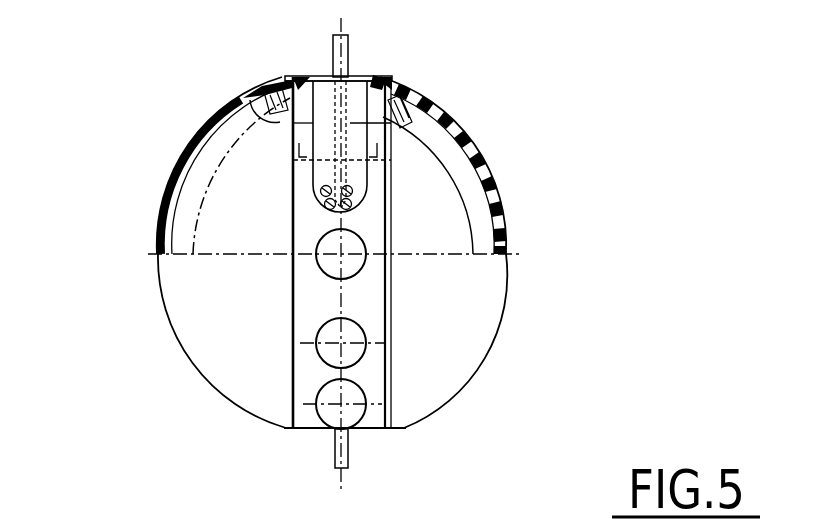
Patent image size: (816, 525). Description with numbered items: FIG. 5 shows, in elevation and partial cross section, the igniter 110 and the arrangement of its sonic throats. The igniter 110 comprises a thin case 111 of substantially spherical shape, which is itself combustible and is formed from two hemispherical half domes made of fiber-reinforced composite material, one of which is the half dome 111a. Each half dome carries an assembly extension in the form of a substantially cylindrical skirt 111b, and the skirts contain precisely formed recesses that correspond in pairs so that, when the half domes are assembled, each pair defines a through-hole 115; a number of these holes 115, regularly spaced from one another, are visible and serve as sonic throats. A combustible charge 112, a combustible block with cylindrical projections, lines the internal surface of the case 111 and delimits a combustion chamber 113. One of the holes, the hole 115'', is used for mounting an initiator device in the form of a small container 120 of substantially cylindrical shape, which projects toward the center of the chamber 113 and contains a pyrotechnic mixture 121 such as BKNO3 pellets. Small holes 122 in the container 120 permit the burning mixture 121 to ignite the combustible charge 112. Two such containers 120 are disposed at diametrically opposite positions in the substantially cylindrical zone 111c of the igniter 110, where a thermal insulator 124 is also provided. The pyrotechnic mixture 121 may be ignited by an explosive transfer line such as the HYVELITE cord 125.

The igniter 110 is at (134, 266).
The case 111 is at (451, 97).
The half dome 111a is at (168, 198).
The cylindrical skirt 111b is at (300, 430).
The cylindrical zone 111c is at (318, 290).
The combustible charge 112 is at (243, 92).
The combustion chamber 113 is at (259, 226).
The through-hole 115 is at (331, 329).
The hole 115'' is at (361, 65).
The small container 120 is at (350, 215).
The pyrotechnic mixture 121 is at (363, 192).
The small holes 122 is at (440, 157).
The thermal insulator 124 is at (305, 76).
The HYVELITE cord 125 is at (345, 48).